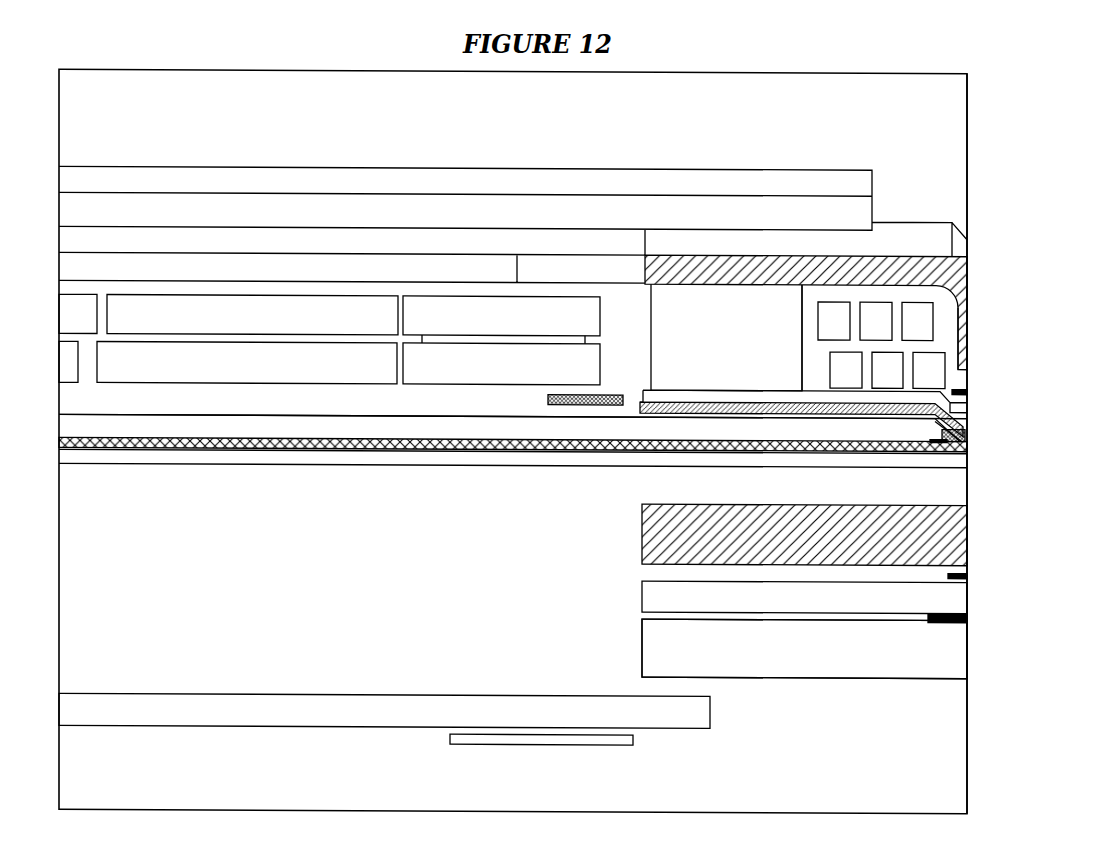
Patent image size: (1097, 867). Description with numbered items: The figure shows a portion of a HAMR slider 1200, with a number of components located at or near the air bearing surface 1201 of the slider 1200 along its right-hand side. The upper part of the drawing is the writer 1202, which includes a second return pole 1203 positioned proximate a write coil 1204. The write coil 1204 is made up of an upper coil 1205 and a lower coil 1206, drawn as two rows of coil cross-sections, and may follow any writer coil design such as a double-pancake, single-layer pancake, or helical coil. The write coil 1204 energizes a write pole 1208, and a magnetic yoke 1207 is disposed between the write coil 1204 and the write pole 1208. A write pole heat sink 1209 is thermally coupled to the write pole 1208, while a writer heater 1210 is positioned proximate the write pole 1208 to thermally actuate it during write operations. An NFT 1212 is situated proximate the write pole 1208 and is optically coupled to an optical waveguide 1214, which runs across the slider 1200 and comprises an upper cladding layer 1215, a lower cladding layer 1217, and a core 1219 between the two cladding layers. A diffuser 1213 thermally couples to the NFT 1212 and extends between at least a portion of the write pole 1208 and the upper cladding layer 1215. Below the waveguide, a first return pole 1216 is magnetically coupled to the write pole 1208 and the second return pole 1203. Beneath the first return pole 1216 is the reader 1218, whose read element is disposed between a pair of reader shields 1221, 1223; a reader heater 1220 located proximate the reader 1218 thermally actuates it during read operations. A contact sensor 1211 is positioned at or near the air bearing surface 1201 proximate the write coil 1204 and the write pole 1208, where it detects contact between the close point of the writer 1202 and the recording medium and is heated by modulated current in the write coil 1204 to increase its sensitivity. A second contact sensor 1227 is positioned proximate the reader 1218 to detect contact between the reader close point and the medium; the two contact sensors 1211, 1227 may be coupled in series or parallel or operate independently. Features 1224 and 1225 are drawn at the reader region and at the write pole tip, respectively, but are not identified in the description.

The slider 1200 is at (845, 69).
The air bearing surface 1201 is at (968, 123).
The writer 1202 is at (540, 287).
The second return pole 1203 is at (968, 264).
The write coil 1204 is at (762, 323).
The upper coil 1205 is at (818, 316).
The lower coil 1206 is at (830, 362).
The magnetic yoke 1207 is at (725, 398).
The write pole 1208 is at (958, 427).
The write pole heat sink 1209 is at (958, 403).
The writer heater 1210 is at (548, 392).
The contact sensor 1211 is at (953, 386).
The NFT 1212 is at (942, 427).
The diffuser 1213 is at (715, 414).
The optical waveguide 1214 is at (242, 463).
The upper cladding layer 1215 is at (338, 428).
The first return pole 1216 is at (953, 546).
The lower cladding layer 1217 is at (334, 455).
The reader 1218 is at (619, 617).
The core 1219 is at (405, 447).
The reader heater 1220 is at (538, 743).
The reader shield 1221 is at (958, 598).
The reader shield 1223 is at (958, 653).
The adhesive strip 1224 is at (967, 613).
The corner region 1225 is at (978, 443).
The contact sensor 1227 is at (967, 570).